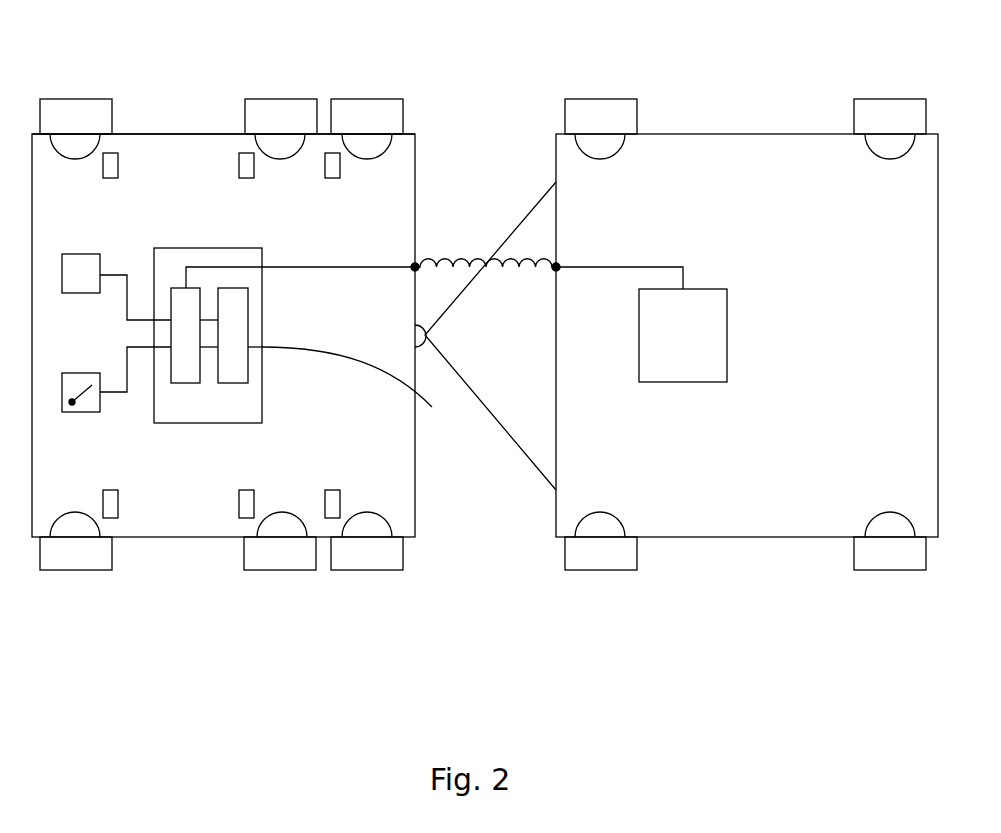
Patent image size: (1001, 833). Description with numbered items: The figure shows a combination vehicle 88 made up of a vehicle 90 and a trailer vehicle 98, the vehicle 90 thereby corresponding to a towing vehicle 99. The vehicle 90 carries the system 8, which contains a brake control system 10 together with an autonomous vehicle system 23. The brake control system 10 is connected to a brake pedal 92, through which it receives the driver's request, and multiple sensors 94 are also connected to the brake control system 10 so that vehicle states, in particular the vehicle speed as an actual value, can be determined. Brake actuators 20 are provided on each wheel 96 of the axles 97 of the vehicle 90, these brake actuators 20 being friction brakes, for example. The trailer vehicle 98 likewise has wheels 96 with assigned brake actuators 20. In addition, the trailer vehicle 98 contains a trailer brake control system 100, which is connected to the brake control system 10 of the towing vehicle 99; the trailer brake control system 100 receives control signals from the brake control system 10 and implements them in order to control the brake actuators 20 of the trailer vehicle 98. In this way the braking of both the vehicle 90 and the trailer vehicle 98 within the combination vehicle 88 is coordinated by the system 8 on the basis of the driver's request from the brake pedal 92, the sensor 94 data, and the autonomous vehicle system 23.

The system 8 is at (216, 423).
The brake control system 10 is at (183, 383).
The brake actuators 20 is at (88, 157).
The autonomous vehicle system 23 is at (411, 336).
The combination vehicle 88 is at (742, 28).
The vehicle 90 is at (220, 134).
The brake pedal 92 is at (88, 373).
The sensors 94 is at (118, 162).
The wheels 96 is at (70, 99).
The axles 97 is at (77, 634).
The trailer vehicle 98 is at (724, 134).
The towing vehicle 99 is at (203, 134).
The trailer brake control system 100 is at (703, 382).